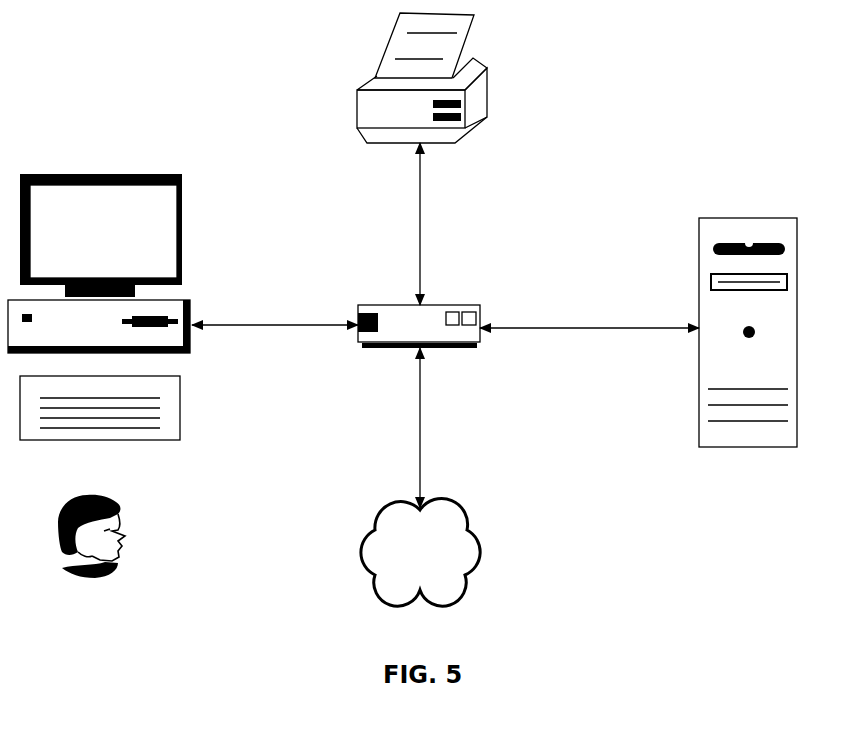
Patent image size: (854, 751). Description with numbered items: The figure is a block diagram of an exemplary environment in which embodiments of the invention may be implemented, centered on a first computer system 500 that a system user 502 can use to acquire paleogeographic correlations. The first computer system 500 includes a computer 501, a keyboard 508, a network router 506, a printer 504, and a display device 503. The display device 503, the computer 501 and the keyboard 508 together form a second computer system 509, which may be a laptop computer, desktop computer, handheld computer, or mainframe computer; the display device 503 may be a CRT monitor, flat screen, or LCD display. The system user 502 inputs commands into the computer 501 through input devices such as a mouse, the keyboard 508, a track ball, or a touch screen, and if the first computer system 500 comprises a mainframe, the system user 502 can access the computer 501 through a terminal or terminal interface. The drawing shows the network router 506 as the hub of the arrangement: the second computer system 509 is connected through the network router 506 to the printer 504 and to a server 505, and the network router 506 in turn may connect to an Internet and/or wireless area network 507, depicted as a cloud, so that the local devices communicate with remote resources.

The first computer system 500 is at (232, 99).
The computer 501 is at (192, 305).
The system user 502 is at (120, 500).
The display device 503 is at (182, 176).
The printer 504 is at (357, 118).
The server 505 is at (700, 430).
The network router 506 is at (440, 305).
The Internet and/or wireless area network (WAN) 507 is at (447, 520).
The keyboard 508 is at (172, 403).
The second computer system 509 is at (186, 229).